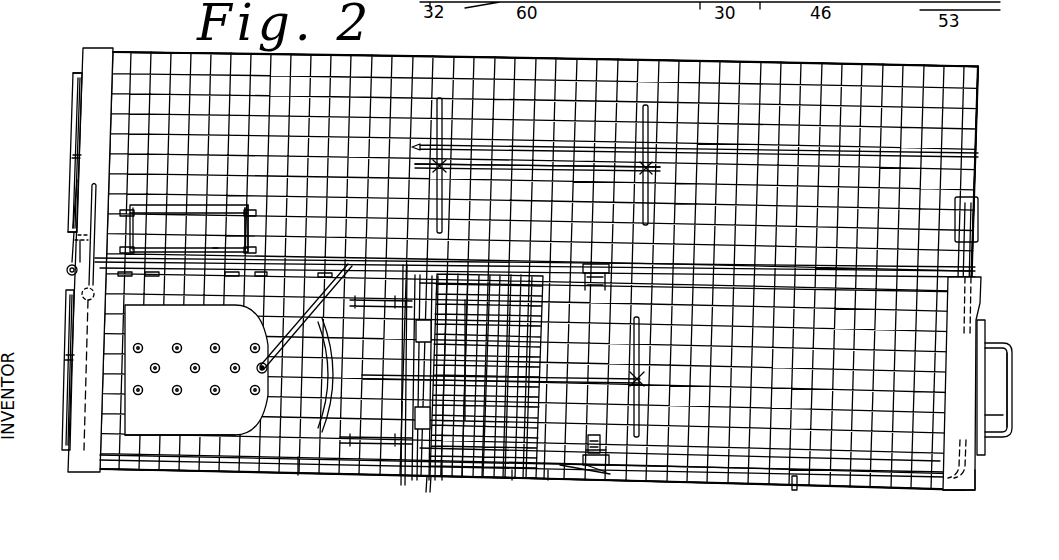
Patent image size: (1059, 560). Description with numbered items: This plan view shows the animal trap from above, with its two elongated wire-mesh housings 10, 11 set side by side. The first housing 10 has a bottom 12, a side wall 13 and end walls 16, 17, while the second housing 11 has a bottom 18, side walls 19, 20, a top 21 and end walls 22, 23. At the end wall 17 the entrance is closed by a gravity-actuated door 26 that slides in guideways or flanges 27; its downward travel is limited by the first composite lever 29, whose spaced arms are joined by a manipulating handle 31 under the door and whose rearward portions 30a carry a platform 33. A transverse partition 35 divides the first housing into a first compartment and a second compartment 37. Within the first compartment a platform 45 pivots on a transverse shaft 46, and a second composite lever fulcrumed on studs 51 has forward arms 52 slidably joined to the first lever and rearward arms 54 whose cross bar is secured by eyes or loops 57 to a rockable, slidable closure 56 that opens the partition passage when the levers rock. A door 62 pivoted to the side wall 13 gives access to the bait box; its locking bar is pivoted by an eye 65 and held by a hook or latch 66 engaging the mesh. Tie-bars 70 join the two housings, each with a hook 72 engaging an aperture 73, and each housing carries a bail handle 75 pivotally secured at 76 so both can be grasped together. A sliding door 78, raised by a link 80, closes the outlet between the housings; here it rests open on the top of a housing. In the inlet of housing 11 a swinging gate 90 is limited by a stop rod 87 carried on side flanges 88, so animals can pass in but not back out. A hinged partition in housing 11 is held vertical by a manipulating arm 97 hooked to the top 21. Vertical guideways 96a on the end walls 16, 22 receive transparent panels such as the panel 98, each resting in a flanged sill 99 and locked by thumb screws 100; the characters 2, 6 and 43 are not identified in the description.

The section line 2 is at (36, 141).
The section line 6 is at (64, 355).
The housing 10 is at (980, 476).
The housing 11 is at (138, 49).
The bottom 12 is at (986, 178).
The side wall 13 is at (694, 471).
The end wall 16 is at (66, 320).
The end wall 17 is at (970, 352).
The bottom 18 is at (808, 66).
The side wall 19 is at (333, 258).
The side wall 20 is at (640, 63).
The top 21 is at (970, 118).
The end wall 22 is at (80, 93).
The end wall 23 is at (982, 80).
The closure or door 26 is at (986, 418).
The guideways or flanges 27 is at (979, 321).
The first composite lever 29 is at (1010, 345).
The portions of the arms 30a is at (300, 462).
The manipulating handle or member 31 is at (1011, 413).
The platform 33 is at (132, 462).
The partition 35 is at (443, 478).
The second compartment 37 is at (183, 411).
The link 43 is at (609, 476).
The platform 45 is at (734, 418).
The transverse bar or shaft 46 is at (791, 486).
The bolts or studs 51 is at (597, 264).
The arms 52 is at (641, 283).
The arms 54 is at (548, 479).
The closure 56 is at (470, 300).
The eyes or loops 57 is at (395, 298).
The door 62 is at (512, 480).
The eye 65 is at (418, 478).
The hook or latch 66 is at (590, 450).
The links or tie-bars 70 is at (86, 246).
The extension or hook 72 is at (76, 186).
The aperture 73 is at (94, 184).
The handle or bail 75 is at (521, 169).
The pivotal securing point 76 is at (434, 160).
The door or closure 78 is at (203, 372).
The link 80 is at (259, 363).
The stop bar or rod 87 is at (173, 212).
The side flanges 88 is at (249, 232).
The gate 90 is at (215, 247).
The vertical guideway 96a is at (73, 75).
The manipulating arm 97 is at (562, 162).
The transparent panel 98 is at (424, 146).
The flanged sill 99 is at (73, 120).
The thumb screws or bolts 100 is at (77, 157).